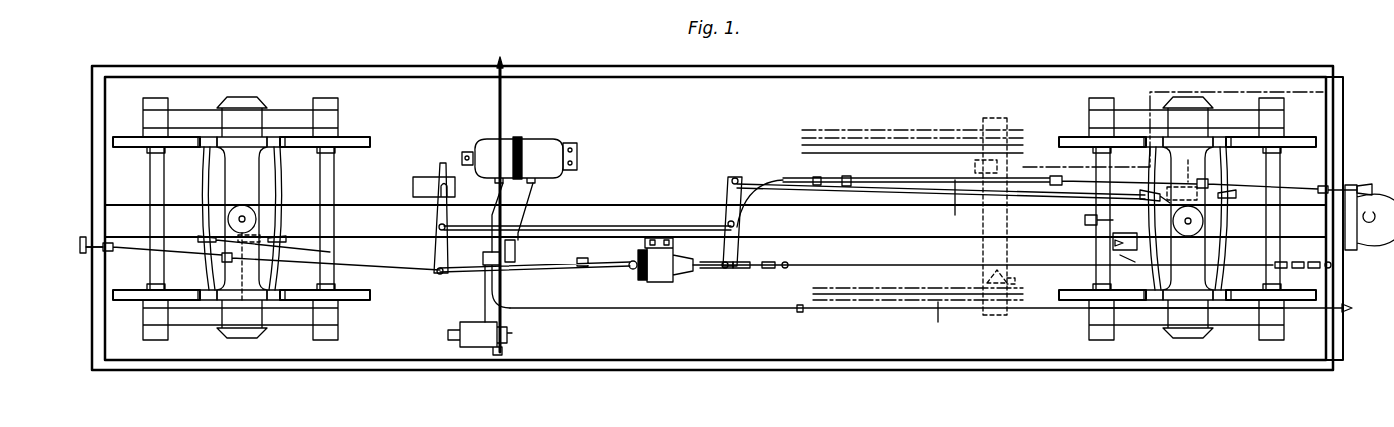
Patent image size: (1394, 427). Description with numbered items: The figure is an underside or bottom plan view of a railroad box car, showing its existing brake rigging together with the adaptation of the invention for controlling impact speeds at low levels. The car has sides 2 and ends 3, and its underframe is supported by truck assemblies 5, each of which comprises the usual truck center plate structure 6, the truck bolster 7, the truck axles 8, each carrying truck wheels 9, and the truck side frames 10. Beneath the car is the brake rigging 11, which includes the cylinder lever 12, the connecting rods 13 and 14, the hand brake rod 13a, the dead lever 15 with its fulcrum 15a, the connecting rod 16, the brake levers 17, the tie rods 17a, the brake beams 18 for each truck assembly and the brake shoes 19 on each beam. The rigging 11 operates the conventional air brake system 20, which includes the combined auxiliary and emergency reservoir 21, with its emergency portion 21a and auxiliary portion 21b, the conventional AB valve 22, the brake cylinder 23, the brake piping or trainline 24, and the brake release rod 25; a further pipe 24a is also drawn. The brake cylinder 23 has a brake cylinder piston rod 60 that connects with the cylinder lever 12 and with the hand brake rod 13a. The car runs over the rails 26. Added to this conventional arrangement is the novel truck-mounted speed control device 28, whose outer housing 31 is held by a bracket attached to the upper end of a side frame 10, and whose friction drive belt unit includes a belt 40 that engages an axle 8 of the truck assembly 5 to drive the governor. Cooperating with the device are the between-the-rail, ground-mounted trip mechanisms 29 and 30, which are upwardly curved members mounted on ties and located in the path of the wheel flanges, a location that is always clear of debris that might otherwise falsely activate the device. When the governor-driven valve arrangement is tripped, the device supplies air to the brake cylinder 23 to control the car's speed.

The side 2 is at (900, 66).
The end 3 is at (94, 350).
The truck assembly 5 is at (277, 105).
The truck center plate structure 6 is at (243, 205).
The truck bolster 7 is at (229, 273).
The truck axle 8 is at (150, 177).
The truck wheel 9 is at (120, 137).
The truck side frame 10 is at (183, 112).
The brake rigging 11 is at (790, 168).
The cylinder lever 12 is at (727, 190).
The connecting rod 13 is at (912, 192).
The hand brake rod 13a is at (846, 262).
The connecting rod 14 is at (638, 226).
The dead lever 15 is at (436, 233).
The fulcrum 15a is at (423, 180).
The connecting rod 16 is at (402, 268).
The brake lever 17 is at (212, 237).
The tie rod 17a is at (718, 223).
The brake beam 18 is at (204, 176).
The brake shoe 19 is at (202, 137).
The air brake system 20 is at (585, 148).
The combined auxiliary and emergency reservoir 21 is at (519, 136).
The emergency portion 21a is at (557, 140).
The auxiliary portion 21b is at (481, 140).
The AB valve 22 is at (511, 341).
The brake cylinder 23 is at (662, 283).
The brake piping or trainline 24 is at (956, 207).
The pipe 24a is at (931, 325).
The brake release rod 25 is at (505, 82).
The rail 26 is at (820, 142).
The truck mounted speed control device 28 is at (1113, 242).
The ground-mounted speed control device trip mechanism 29 is at (975, 166).
The ground-mounted speed control device trip mechanism 30 is at (987, 279).
The outer housing 31 is at (1133, 258).
The belt 40 is at (1085, 221).
The brake cylinder piston rod 60 is at (713, 270).